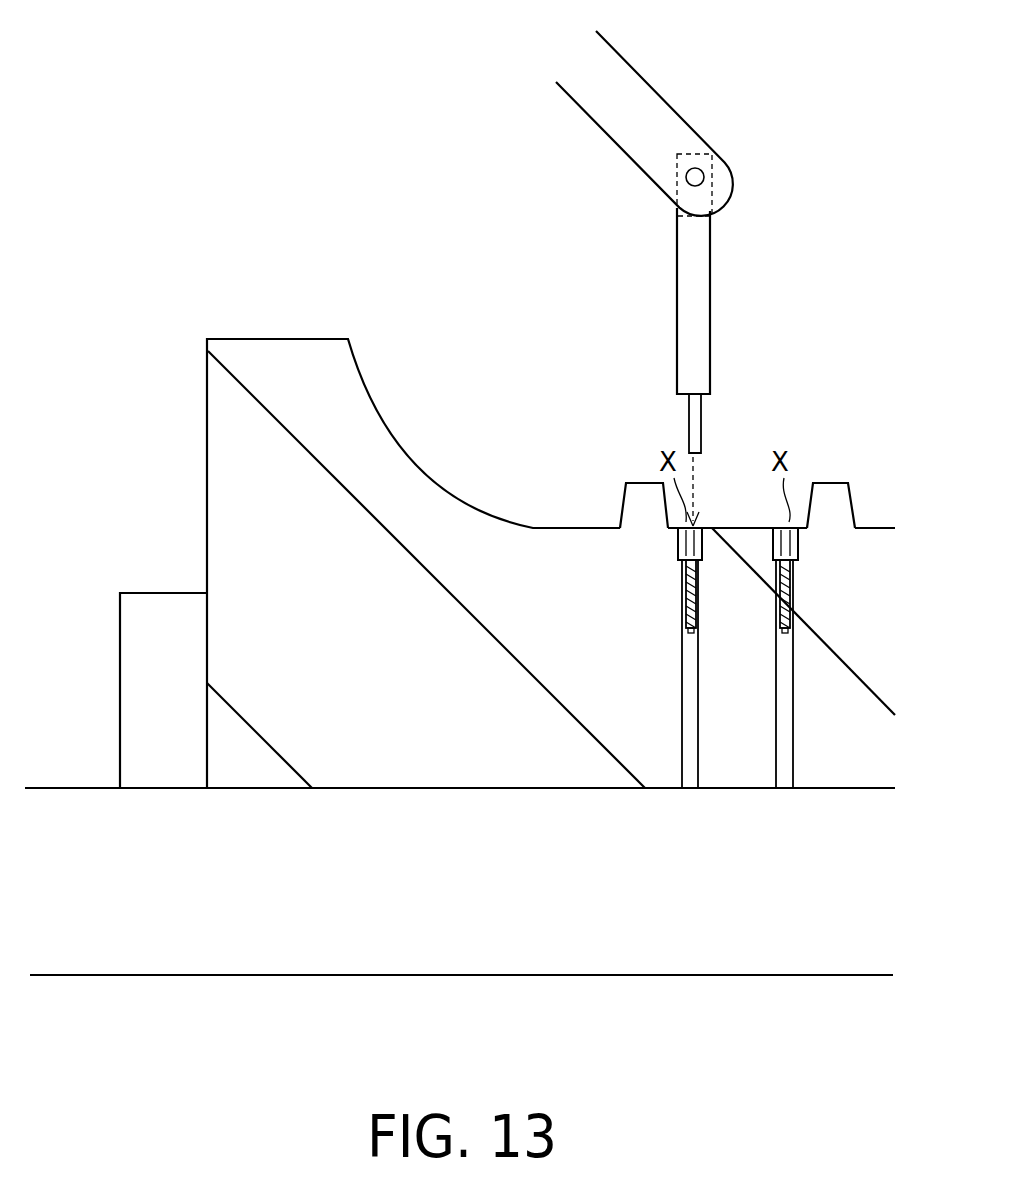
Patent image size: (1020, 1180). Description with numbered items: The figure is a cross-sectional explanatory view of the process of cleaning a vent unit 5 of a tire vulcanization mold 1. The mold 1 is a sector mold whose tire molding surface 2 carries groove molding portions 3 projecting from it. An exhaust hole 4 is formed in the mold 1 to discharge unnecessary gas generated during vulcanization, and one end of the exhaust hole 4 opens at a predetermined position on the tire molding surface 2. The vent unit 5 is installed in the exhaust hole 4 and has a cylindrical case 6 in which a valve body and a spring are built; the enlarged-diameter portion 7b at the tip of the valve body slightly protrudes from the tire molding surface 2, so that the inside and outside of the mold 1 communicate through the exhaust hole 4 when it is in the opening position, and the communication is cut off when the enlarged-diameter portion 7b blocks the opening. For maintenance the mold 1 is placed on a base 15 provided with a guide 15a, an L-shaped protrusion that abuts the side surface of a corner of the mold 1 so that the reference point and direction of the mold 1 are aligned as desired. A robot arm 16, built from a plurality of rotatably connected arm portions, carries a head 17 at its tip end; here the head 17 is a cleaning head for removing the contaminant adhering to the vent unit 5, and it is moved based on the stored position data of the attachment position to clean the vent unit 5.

The tire vulcanization mold 1 is at (319, 339).
The tire molding surface 2 is at (565, 527).
The groove molding portion 3 is at (640, 484).
The exhaust hole 4 is at (692, 657).
The vent unit 5 is at (685, 585).
The case 6 is at (685, 600).
The enlarged-diameter portion 7b is at (698, 527).
The base 15 is at (512, 947).
The guide 15a is at (168, 608).
The robot arm 16 is at (622, 137).
The head 17 is at (697, 430).